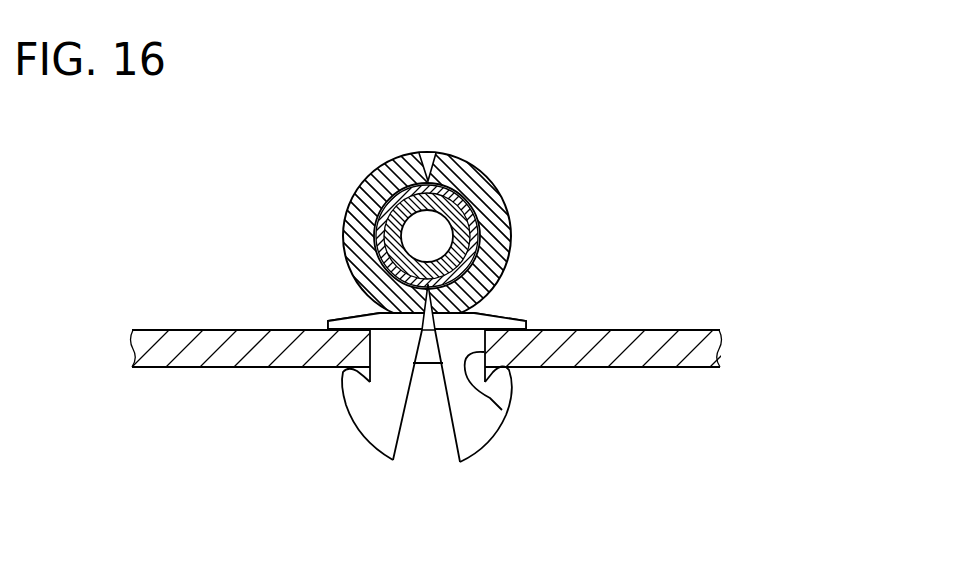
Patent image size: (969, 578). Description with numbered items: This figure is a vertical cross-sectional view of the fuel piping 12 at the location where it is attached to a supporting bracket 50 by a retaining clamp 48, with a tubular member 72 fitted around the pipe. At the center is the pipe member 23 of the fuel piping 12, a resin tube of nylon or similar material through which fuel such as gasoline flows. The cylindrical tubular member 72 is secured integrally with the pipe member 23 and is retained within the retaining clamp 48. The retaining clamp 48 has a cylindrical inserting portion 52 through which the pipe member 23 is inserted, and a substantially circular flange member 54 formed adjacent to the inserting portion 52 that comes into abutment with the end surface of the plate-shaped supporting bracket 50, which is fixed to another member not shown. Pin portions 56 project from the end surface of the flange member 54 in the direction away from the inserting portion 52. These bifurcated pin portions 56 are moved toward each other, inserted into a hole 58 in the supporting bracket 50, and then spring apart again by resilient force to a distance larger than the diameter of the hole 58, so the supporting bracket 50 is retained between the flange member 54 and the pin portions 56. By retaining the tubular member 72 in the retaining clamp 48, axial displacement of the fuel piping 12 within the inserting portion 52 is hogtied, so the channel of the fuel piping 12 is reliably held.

The fuel piping 12 is at (480, 210).
The pipe member 23 is at (375, 214).
The retaining clamp 48 is at (424, 236).
The supporting bracket 50 is at (613, 355).
The inserting portion 52 is at (402, 162).
The flange member 54 is at (330, 319).
The pin portions 56 is at (387, 422).
The hole 58 is at (502, 412).
The tubular member 72 is at (385, 184).